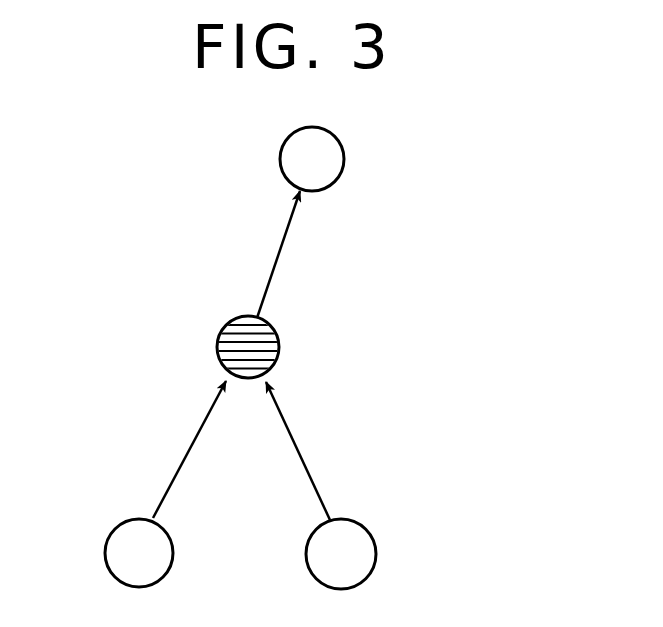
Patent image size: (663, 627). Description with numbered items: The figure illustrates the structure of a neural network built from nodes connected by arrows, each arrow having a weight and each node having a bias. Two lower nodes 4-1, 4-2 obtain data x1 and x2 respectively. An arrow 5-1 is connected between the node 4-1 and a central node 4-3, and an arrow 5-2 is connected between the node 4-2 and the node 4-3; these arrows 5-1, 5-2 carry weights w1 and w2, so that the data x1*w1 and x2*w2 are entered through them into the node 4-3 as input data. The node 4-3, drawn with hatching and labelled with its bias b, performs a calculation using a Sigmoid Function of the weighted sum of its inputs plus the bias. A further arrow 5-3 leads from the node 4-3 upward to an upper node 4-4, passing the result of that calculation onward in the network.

The node 4-1 is at (173, 554).
The node 4-2 is at (376, 555).
The node 4-3 is at (276, 331).
The node 4-4 is at (345, 165).
The arrow 5-1 is at (190, 446).
The arrow 5-2 is at (284, 413).
The arrow 5-3 is at (280, 246).